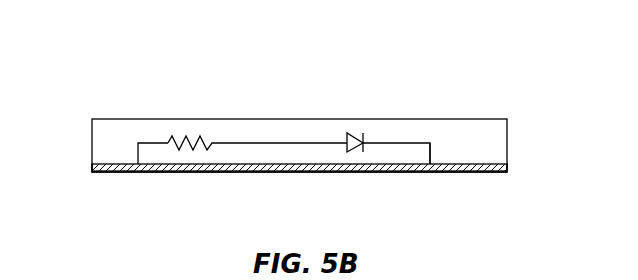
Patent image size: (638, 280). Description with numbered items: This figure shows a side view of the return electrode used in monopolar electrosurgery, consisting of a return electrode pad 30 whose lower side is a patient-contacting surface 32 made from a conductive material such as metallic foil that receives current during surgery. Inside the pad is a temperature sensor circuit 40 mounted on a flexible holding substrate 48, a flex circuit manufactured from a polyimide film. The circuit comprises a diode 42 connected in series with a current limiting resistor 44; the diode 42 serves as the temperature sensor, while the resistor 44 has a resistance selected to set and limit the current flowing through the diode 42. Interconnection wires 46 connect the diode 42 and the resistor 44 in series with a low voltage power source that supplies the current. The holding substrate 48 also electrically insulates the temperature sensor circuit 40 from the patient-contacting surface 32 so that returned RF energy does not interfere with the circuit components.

The return electrode pad 30 is at (108, 76).
The patient-contacting surface 32 is at (130, 173).
The temperature sensor circuit 40 is at (275, 133).
The diode 42 is at (354, 132).
The current limiting resistor 44 is at (197, 131).
The interconnection wires 46 is at (433, 155).
The holding substrate 48 is at (330, 168).